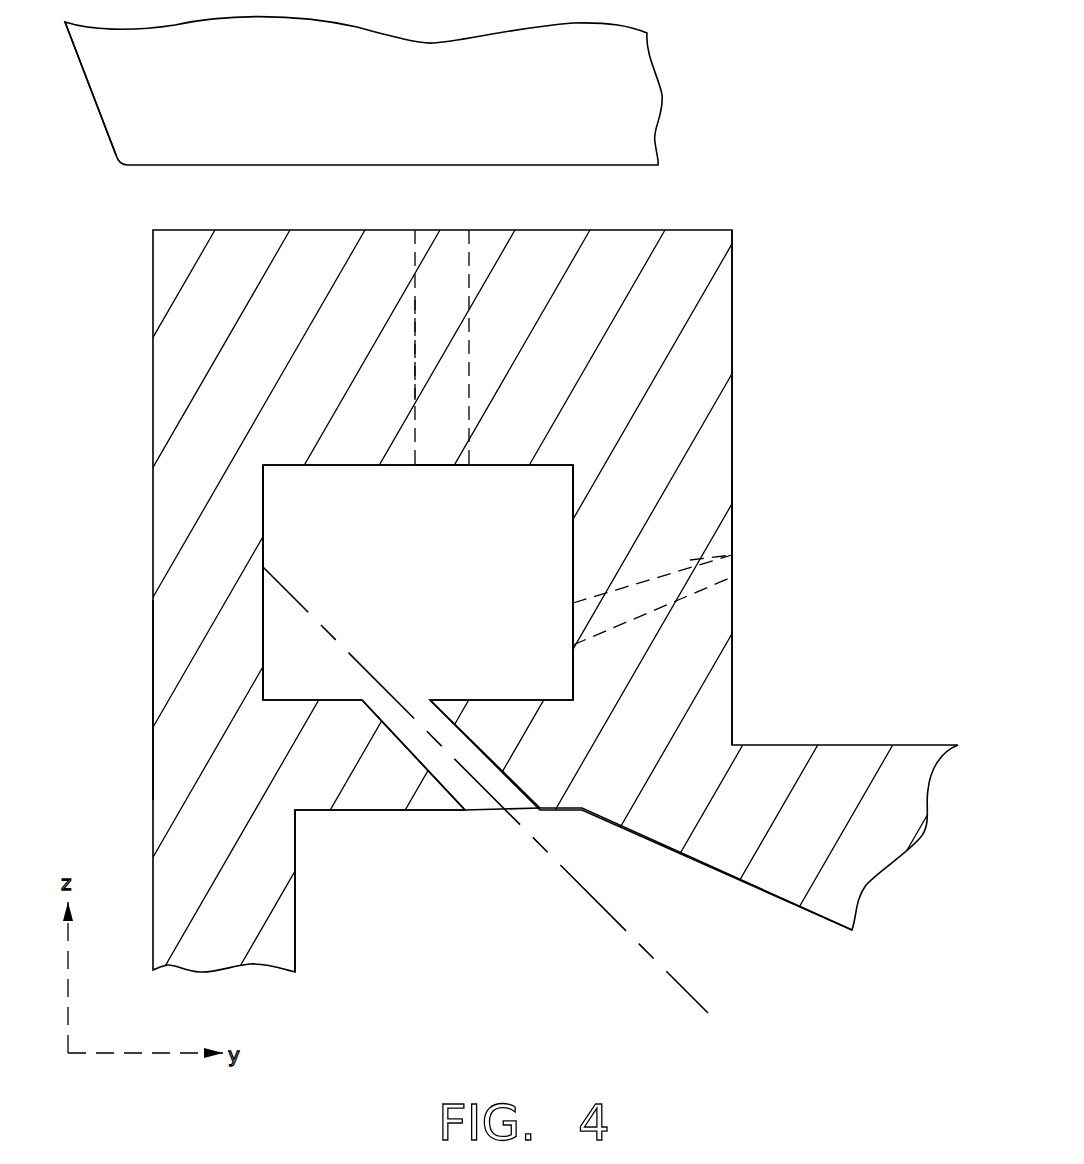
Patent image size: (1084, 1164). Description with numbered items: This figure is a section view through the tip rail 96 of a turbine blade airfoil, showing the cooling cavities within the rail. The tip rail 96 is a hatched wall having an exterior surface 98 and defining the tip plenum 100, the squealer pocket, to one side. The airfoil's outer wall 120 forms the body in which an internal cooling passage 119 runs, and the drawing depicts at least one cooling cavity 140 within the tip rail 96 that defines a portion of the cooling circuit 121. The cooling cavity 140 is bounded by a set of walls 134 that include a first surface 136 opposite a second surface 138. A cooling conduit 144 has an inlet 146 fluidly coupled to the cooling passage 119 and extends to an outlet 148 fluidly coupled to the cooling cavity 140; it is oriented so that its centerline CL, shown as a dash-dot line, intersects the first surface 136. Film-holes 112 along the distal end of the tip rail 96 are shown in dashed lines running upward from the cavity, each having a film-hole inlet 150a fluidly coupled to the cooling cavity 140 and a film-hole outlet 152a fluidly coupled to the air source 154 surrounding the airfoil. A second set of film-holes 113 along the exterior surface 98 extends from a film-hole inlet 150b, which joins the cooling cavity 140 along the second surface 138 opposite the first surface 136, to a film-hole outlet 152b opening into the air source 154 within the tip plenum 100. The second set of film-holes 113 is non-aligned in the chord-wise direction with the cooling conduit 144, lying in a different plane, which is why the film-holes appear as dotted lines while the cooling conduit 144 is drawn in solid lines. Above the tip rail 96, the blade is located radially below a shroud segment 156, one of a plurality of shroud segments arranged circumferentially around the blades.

The tip rail 96 is at (277, 258).
The exterior surface 98 is at (733, 307).
The tip plenum 100 is at (937, 511).
The film-holes 112 is at (439, 326).
The second set of film-holes 113 is at (717, 557).
The cooling passage 119 is at (464, 908).
The outer wall 120 is at (142, 687).
The cooling circuit 121 is at (330, 848).
The set of walls 134 is at (272, 518).
The first surface 136 is at (263, 552).
The second surface 138 is at (573, 553).
The cooling cavity 140 is at (422, 596).
The cooling conduit 144 is at (457, 752).
The inlet 146 is at (491, 806).
The outlet 148 is at (385, 712).
The film-hole inlet 150a is at (440, 467).
The film-hole inlet 150b is at (573, 627).
The film-hole outlet 152a is at (440, 232).
The film-hole outlet 152b is at (732, 557).
The air source 154 is at (110, 193).
The shroud segment 156 is at (416, 122).
The centerline CL is at (688, 990).